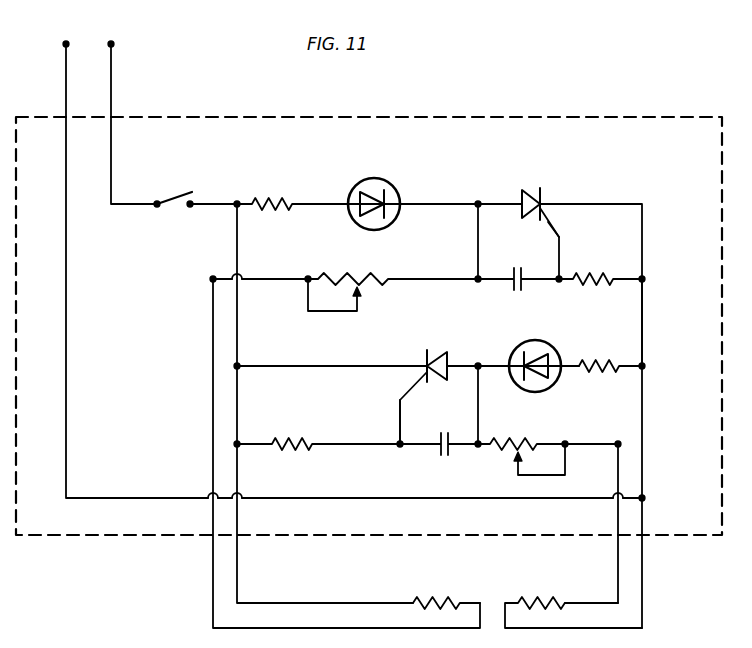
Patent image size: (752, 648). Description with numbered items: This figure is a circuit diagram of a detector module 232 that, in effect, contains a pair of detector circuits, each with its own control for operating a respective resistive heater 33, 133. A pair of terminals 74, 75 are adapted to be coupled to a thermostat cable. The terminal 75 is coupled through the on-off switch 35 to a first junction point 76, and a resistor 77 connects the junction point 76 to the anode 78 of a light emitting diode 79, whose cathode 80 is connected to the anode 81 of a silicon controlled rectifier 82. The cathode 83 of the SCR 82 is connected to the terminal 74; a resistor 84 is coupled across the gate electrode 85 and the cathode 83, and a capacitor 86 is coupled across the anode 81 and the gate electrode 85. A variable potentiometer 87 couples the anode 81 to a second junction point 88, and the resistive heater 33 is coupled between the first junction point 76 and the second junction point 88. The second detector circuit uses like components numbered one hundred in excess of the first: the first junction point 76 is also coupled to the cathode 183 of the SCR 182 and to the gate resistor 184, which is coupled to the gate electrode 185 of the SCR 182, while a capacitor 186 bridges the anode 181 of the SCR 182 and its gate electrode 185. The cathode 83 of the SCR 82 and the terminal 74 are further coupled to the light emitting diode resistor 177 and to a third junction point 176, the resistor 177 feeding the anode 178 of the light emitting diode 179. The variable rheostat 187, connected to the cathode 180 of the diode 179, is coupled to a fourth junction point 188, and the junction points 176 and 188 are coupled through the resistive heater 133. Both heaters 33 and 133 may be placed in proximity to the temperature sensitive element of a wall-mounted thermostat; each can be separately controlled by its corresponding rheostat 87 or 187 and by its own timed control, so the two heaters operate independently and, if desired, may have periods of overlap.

The control circuit enclosure 232 is at (560, 117).
The terminal 74 is at (65, 66).
The terminal 75 is at (111, 72).
The switch 35 is at (156, 202).
The first junction point 76 is at (238, 200).
The resistor 77 is at (262, 200).
The anode 78 is at (360, 200).
The light emitting diode 79 is at (411, 168).
The cathode 80 is at (386, 198).
The anode 81 is at (520, 200).
The silicon controlled rectifier 82 is at (551, 172).
The cathode 83 is at (550, 200).
The gate electrode 85 is at (550, 225).
The second junction point 88 is at (210, 279).
The variable potentiometer 87 is at (366, 275).
The capacitor 86 is at (512, 274).
The resistor 84 is at (583, 275).
The cathode 183 is at (420, 360).
The silicon controlled rectifier 182 is at (456, 332).
The anode lead 181 is at (449, 360).
The light emitting diode 179 is at (556, 332).
The cathode 180 is at (524, 380).
The diode lead 178 is at (558, 378).
The light emitting diode resistor 177 is at (600, 360).
The third junction point 176 is at (645, 364).
The gate resistor 184 is at (298, 440).
The gate electrode 185 is at (402, 389).
The capacitor 186 is at (438, 438).
The variable rheostat 187 is at (522, 440).
The fourth junction point 188 is at (620, 440).
The resistive heater 33 is at (414, 600).
The resistive heater 133 is at (570, 600).